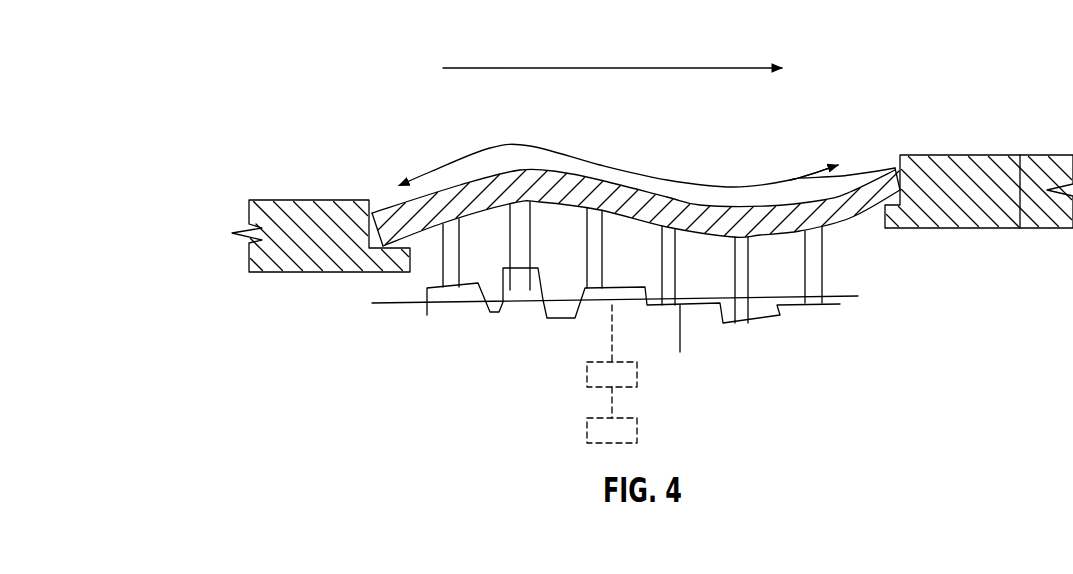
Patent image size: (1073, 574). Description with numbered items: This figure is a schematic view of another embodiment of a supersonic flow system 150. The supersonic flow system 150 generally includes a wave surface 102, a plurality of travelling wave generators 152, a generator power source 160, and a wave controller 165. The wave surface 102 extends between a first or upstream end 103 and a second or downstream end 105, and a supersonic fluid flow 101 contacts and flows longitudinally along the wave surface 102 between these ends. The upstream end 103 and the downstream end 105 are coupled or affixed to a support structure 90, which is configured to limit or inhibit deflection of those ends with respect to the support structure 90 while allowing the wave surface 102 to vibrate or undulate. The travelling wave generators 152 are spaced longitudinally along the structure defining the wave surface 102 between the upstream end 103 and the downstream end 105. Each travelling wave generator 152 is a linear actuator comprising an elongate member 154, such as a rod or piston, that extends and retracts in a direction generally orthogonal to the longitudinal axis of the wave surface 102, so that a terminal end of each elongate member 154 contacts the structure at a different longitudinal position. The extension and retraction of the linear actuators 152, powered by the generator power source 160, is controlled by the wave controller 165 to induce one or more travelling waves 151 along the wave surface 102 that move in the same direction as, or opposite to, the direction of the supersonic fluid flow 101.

The supersonic flow system 150 is at (279, 62).
The supersonic fluid flow 101 is at (575, 67).
The travelling waves 151 is at (498, 146).
The upstream end 103 is at (388, 203).
The wave surface 102 is at (732, 205).
The downstream end 105 is at (892, 167).
The support structure 90 is at (262, 210).
The elongate member 154 is at (452, 230).
The travelling wave generator 152 is at (427, 308).
The generator power source 160 is at (590, 373).
The wave controller 165 is at (590, 422).